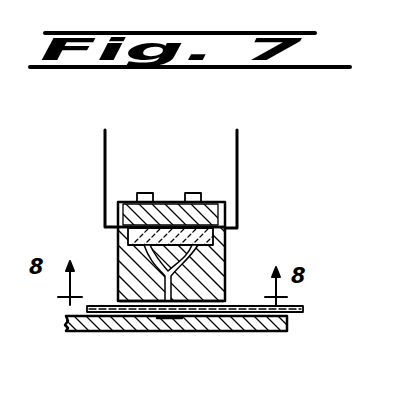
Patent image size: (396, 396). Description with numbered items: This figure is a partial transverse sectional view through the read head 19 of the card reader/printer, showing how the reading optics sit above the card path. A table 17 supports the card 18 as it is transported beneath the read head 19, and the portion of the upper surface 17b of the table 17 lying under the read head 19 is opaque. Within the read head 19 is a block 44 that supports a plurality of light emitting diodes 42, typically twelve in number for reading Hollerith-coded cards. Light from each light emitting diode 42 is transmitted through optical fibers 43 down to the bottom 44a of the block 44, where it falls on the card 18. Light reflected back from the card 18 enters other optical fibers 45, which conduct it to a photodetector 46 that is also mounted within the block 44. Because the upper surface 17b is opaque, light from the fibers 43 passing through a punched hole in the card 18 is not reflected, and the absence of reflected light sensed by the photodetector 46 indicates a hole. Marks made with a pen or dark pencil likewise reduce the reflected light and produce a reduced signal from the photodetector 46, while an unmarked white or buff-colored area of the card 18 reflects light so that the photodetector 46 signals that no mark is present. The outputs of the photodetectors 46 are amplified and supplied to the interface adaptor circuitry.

The table 17 is at (118, 322).
The upper surface of the table 17b is at (170, 320).
The card 18 is at (303, 312).
The read head 19 is at (241, 180).
The light emitting diode 42 is at (194, 193).
The optical fibers 43 is at (225, 253).
The block 44 is at (118, 233).
The bottom of the block 44a is at (210, 302).
The optical fibers 45 is at (142, 254).
The photodetector 46 is at (145, 193).